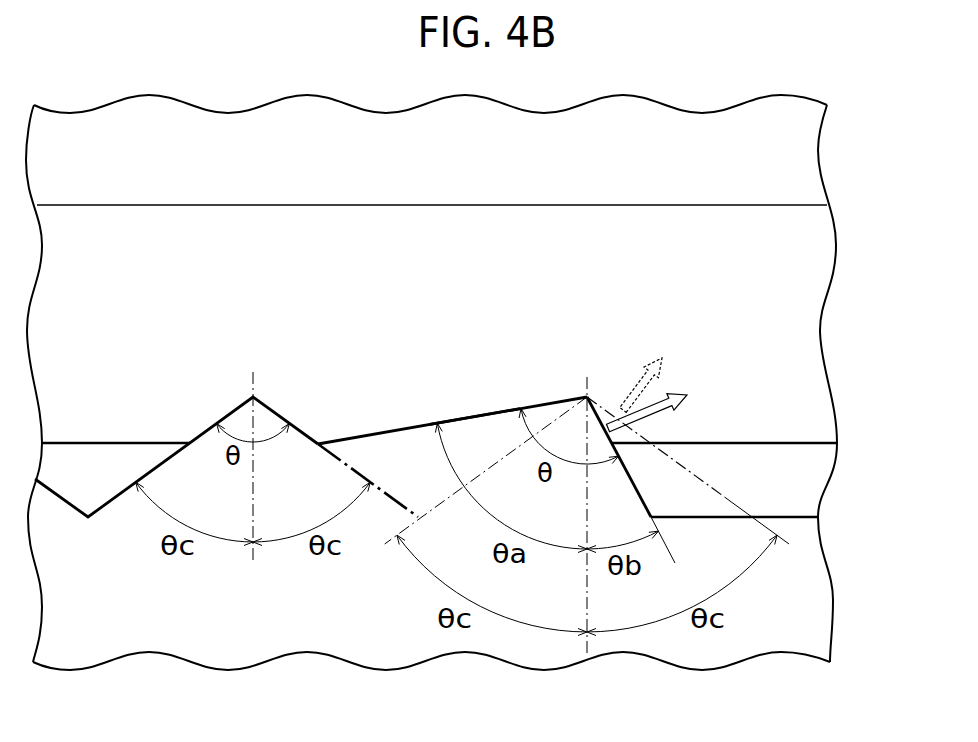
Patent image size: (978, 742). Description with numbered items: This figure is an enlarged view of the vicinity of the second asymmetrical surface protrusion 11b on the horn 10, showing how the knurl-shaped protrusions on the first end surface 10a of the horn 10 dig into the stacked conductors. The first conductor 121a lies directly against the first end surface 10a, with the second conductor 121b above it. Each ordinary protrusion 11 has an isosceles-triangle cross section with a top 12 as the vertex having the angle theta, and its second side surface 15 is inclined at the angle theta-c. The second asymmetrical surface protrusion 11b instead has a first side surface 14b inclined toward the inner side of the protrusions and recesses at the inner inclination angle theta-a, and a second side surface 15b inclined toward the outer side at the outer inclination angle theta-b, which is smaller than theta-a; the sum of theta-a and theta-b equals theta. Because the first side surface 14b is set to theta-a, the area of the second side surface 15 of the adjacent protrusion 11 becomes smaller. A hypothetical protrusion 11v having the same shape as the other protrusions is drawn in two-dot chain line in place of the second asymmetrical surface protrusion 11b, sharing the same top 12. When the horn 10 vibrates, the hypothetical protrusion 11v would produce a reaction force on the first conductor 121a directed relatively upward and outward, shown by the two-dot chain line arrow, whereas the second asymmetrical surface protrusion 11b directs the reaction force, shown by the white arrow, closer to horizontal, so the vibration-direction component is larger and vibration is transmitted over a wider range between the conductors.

The horn 10 is at (178, 608).
The first end surface 10a is at (797, 517).
The protrusion 11 is at (50, 507).
The second asymmetrical surface protrusion 11b is at (483, 432).
The hypothetical protrusion 11v is at (707, 442).
The top 12 is at (254, 396).
The first side surface 14b is at (392, 428).
The second side surface 15 is at (725, 493).
The second side surface 15b is at (673, 473).
The first conductor 121a is at (803, 273).
The second conductor 121b is at (803, 160).